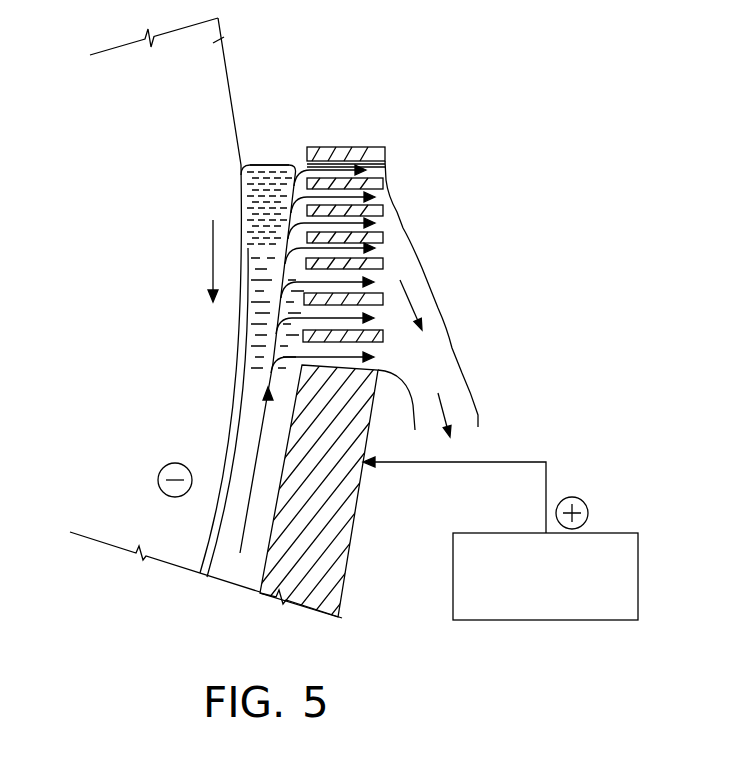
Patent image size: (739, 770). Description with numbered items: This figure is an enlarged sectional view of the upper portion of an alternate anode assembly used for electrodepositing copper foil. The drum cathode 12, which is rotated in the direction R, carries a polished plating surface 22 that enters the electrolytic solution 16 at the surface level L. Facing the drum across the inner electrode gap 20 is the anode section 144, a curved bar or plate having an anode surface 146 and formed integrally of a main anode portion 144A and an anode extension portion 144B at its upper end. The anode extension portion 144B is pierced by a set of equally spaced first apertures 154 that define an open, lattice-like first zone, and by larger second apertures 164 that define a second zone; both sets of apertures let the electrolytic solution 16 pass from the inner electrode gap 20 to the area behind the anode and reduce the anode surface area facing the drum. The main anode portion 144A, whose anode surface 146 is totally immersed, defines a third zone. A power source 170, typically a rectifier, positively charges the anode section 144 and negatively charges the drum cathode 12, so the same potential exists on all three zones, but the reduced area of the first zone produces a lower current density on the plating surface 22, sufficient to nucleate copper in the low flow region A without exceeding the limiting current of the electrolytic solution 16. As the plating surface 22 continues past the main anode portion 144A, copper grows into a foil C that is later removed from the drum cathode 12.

The drum cathode 12 is at (230, 32).
The plating surface 22 is at (227, 70).
The low flow region A is at (263, 183).
The surface level L is at (277, 165).
The anode extension portion 144B is at (347, 150).
The first apertures 154 is at (380, 197).
The second apertures 164 is at (377, 325).
The electrolytic solution 16 is at (463, 403).
The direction of rotation R is at (212, 248).
The anode surface 146 is at (290, 442).
The anode section 144 is at (361, 568).
The main anode portion 144A is at (317, 600).
The inner electrode gap 20 is at (227, 572).
The copper foil C is at (213, 530).
The power source 170 is at (612, 533).